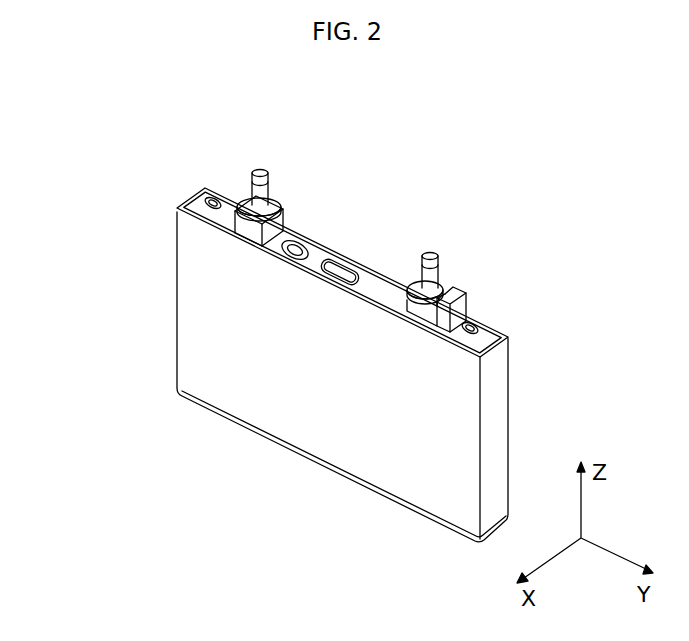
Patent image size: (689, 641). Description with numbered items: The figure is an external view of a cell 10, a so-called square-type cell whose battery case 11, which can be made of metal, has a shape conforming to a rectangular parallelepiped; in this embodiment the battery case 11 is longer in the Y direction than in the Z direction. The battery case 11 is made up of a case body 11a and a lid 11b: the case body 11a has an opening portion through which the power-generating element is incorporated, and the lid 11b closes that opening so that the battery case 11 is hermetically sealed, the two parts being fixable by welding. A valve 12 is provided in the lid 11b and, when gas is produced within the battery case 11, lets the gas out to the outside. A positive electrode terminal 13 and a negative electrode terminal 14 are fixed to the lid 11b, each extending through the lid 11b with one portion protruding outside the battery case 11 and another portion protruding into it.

The cell 10 is at (311, 340).
The battery case 11 is at (275, 357).
The case body 11a is at (198, 312).
The lid 11b is at (380, 297).
The valve 12 is at (342, 271).
The positive electrode terminal 13 is at (432, 280).
The negative electrode terminal 14 is at (258, 197).